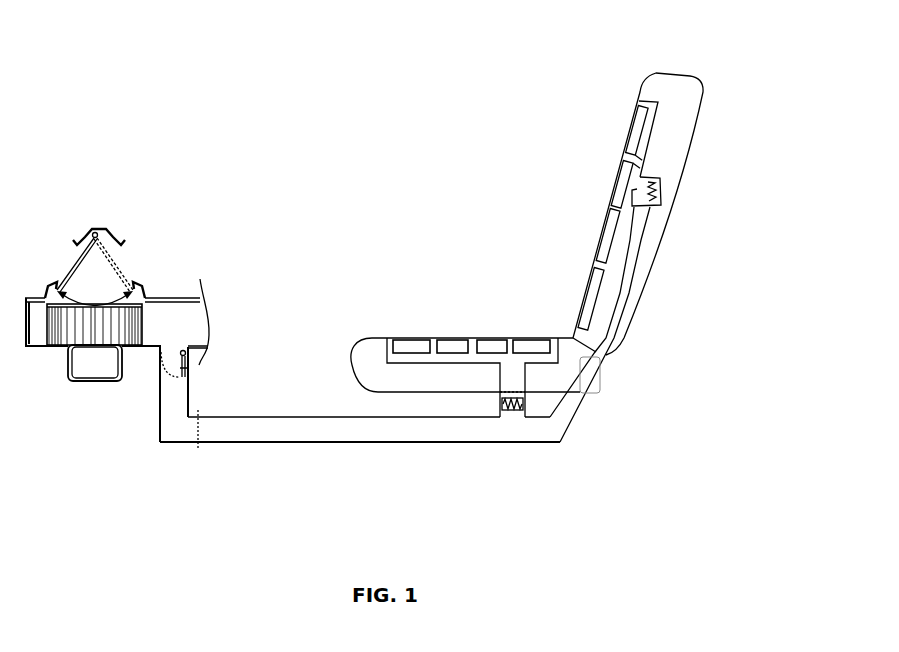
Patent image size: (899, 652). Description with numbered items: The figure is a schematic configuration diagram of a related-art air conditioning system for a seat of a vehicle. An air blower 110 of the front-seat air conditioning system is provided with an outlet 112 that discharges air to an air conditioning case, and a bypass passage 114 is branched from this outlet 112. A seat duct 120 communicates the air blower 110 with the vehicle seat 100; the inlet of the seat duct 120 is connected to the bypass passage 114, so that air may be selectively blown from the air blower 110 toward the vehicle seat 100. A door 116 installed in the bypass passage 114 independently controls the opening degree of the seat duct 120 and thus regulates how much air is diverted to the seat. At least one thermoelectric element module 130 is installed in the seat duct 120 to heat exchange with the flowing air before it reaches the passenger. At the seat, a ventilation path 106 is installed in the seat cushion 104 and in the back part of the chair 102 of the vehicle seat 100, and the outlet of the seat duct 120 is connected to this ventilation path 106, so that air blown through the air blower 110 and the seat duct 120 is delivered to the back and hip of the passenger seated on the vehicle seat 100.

The vehicle seat 100 is at (614, 126).
The back part of a chair 102 is at (653, 83).
The seat cushion 104 is at (365, 338).
The ventilation path 106 is at (538, 352).
The air blower 110 is at (99, 212).
The outlet 112 is at (171, 298).
The bypass passage 114 is at (160, 417).
The door 116 is at (189, 368).
The seat duct 120 is at (417, 443).
The thermoelectric element module 130 is at (661, 191).